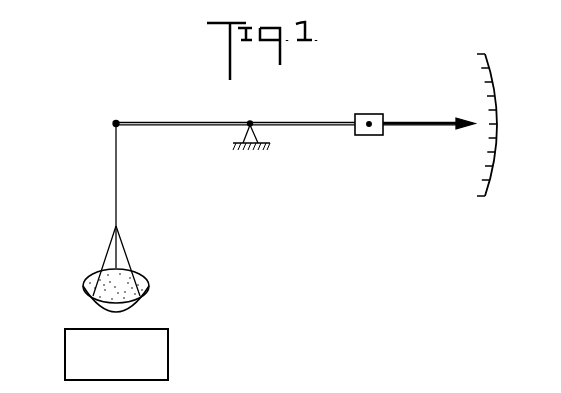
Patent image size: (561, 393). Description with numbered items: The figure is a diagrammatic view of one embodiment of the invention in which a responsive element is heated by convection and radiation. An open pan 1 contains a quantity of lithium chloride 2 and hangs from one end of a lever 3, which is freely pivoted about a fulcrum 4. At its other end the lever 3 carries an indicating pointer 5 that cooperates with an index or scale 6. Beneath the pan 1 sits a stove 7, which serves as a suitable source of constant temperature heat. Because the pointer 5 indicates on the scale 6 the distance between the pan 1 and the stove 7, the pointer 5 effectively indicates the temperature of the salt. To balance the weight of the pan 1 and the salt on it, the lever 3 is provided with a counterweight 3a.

The open pan 1 is at (143, 283).
The lithium chloride 2 is at (90, 282).
The lever 3 is at (179, 121).
The counterweight 3a is at (367, 113).
The fulcrum 4 is at (262, 124).
The indicating pointer 5 is at (470, 128).
The scale 6 is at (497, 98).
The stove 7 is at (166, 355).